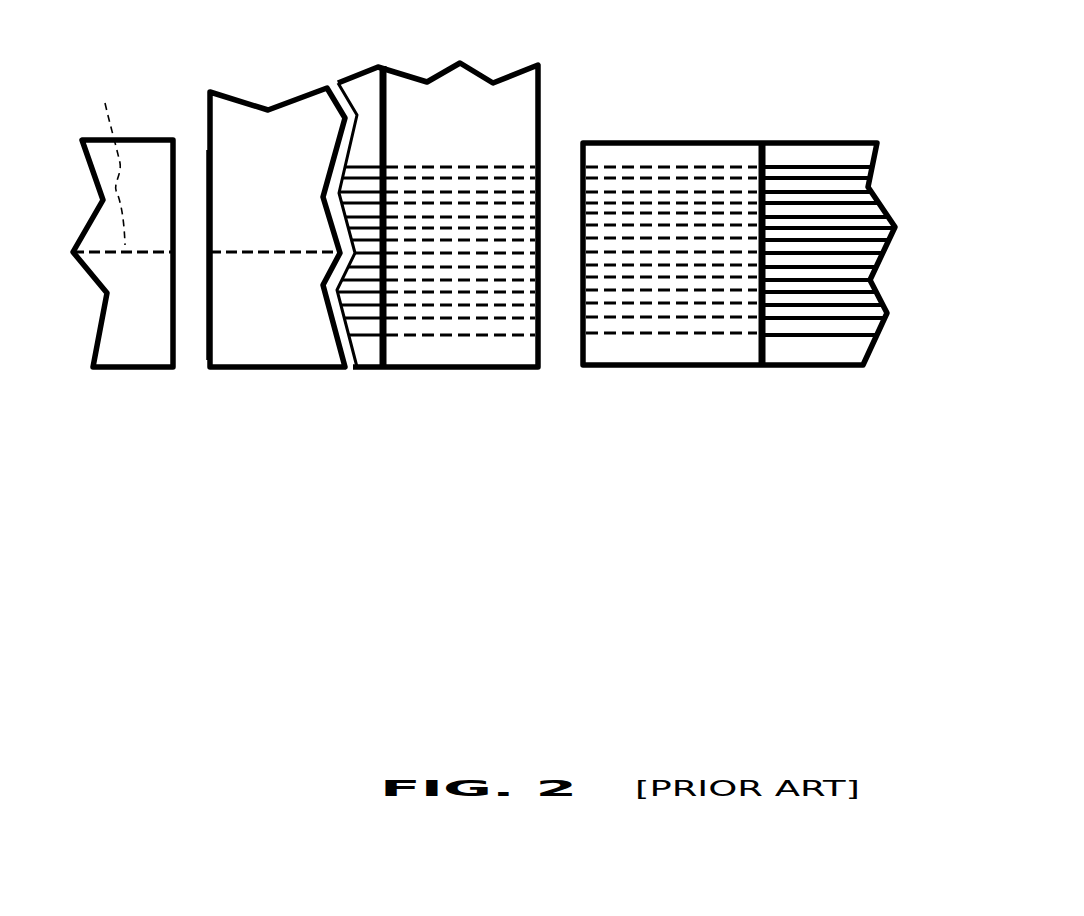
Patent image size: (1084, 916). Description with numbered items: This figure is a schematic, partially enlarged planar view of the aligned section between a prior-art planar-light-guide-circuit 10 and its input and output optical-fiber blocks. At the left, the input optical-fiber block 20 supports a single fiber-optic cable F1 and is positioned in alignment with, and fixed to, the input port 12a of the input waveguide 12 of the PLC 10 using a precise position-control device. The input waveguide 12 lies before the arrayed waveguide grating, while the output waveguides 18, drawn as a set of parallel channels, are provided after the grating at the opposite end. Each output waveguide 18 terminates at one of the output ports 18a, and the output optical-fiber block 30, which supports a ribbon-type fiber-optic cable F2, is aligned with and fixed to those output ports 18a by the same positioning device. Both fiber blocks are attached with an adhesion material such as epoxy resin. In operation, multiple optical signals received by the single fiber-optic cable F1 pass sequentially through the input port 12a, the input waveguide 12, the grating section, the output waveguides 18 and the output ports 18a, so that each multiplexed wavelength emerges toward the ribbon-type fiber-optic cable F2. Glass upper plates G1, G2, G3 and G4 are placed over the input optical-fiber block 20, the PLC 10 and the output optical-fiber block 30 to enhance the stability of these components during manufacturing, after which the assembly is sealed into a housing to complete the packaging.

The planar-light-guide-circuit 10 is at (466, 307).
The input waveguide 12 is at (255, 256).
The input port 12a is at (208, 250).
The output waveguides 18 is at (372, 337).
The output ports 18a is at (548, 337).
The input optical-fiber block 20 is at (110, 376).
The output optical-fiber block 30 is at (739, 285).
The single fiber-optic cable F1 is at (110, 162).
The ribbon-type fiber-optic cable F2 is at (790, 165).
The glass upper plate G1 is at (130, 356).
The glass upper plate G2 is at (240, 350).
The glass upper plate G3 is at (487, 125).
The glass upper plate G4 is at (652, 153).